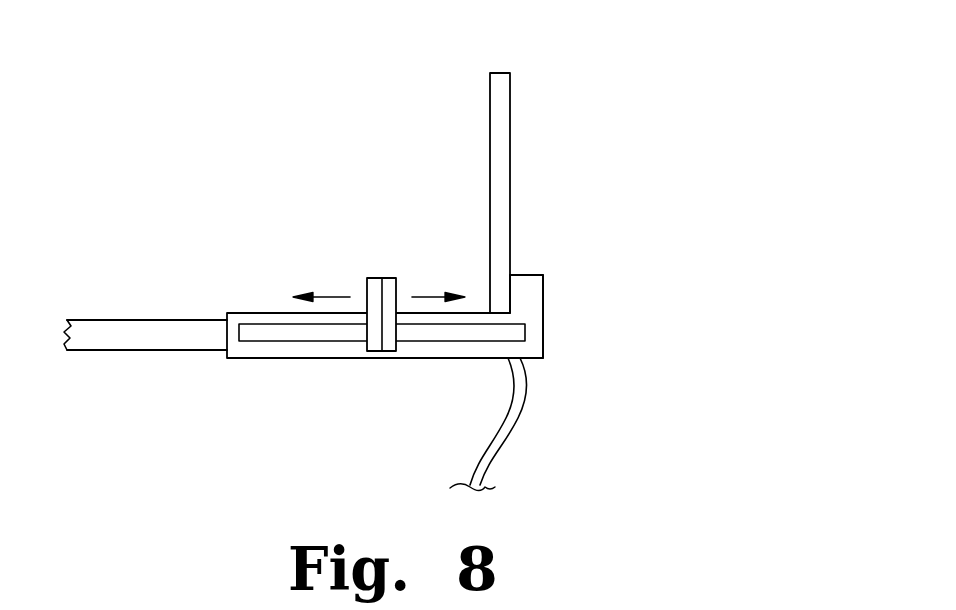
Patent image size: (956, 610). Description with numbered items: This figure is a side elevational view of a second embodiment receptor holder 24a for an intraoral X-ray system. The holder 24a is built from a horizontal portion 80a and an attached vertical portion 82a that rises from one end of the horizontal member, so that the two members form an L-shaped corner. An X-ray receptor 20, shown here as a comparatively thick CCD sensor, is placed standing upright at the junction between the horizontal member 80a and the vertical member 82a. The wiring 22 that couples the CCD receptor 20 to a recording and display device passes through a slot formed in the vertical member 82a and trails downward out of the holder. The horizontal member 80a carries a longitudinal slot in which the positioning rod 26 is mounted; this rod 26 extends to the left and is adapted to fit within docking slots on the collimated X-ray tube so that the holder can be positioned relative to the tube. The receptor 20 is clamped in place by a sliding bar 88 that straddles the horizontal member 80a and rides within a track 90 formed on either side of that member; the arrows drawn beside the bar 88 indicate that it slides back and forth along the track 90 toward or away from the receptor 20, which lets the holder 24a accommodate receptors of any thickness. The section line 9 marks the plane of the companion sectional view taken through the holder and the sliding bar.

The section line 9- 9 is at (371, 49).
The X-ray receptor 20 is at (510, 95).
The wiring 22 is at (480, 455).
The receptor holder 24a is at (577, 277).
The rod 26 is at (90, 350).
The horizontal portion 80a is at (385, 355).
The vertical portion 82a is at (543, 318).
The sliding bar 88 is at (367, 281).
The track 90 is at (483, 335).